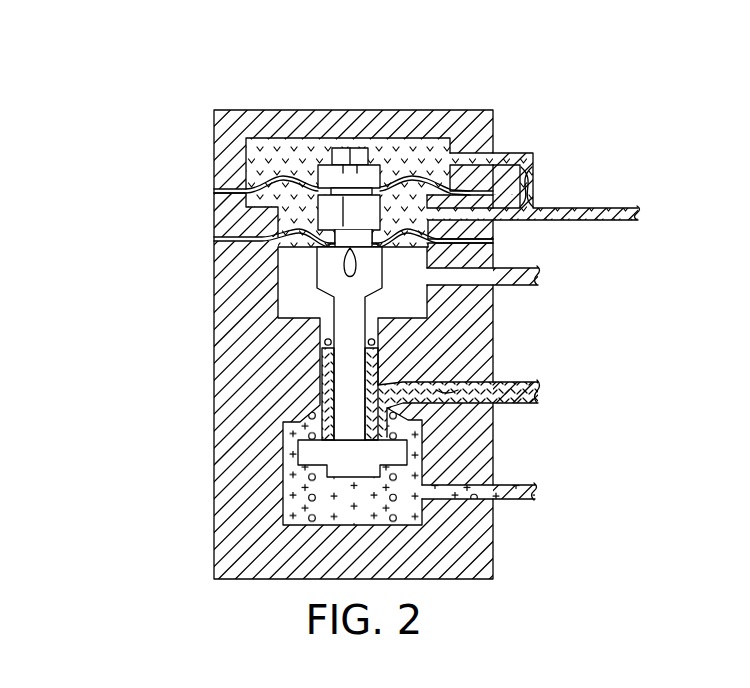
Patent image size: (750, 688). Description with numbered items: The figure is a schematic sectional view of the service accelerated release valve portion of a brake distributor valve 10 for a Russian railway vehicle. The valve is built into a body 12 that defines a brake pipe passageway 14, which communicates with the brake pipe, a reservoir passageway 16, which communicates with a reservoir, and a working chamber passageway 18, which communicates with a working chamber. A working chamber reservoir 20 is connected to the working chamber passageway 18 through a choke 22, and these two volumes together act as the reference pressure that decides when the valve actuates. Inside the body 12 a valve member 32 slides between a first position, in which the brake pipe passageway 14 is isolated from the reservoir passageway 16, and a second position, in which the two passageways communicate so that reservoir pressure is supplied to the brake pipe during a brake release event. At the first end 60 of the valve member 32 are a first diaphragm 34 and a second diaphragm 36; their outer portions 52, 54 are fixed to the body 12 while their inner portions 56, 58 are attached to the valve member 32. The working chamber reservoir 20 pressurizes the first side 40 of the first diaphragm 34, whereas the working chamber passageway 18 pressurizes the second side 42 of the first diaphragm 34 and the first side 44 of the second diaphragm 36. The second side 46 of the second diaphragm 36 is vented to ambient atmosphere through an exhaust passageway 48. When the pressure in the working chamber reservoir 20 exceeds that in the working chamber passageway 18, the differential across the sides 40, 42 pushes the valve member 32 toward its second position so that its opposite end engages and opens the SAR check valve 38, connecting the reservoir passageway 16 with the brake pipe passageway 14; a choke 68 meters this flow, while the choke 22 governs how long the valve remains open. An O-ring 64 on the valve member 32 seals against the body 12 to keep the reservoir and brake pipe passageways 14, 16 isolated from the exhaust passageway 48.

The brake distributor valve 10 is at (180, 110).
The body 12 is at (257, 114).
The brake pipe passageway 14 is at (538, 395).
The reservoir passageway 16 is at (508, 500).
The working chamber passageway 18 is at (608, 223).
The working chamber reservoir 20 is at (510, 152).
The choke 22 is at (530, 182).
The valve member 32 is at (343, 358).
The first diaphragm 34 is at (277, 178).
The second diaphragm 36 is at (301, 245).
The SAR check valve 38 is at (298, 452).
The first side of the first diaphragm 40 is at (430, 143).
The second side of the first diaphragm 42 is at (270, 213).
The first side of the second diaphragm 44 is at (240, 230).
The second side of the second diaphragm 46 is at (407, 240).
The exhaust passageway 48 is at (514, 285).
The outer portion of the first diaphragm 52 is at (240, 180).
The outer portion of the second diaphragm 54 is at (450, 260).
The inner portion of the first diaphragm 56 is at (373, 187).
The inner portion of the second diaphragm 58 is at (318, 266).
The first end of the valve member 60 is at (345, 146).
The O-ring 64 is at (378, 340).
The choke 68 is at (450, 403).